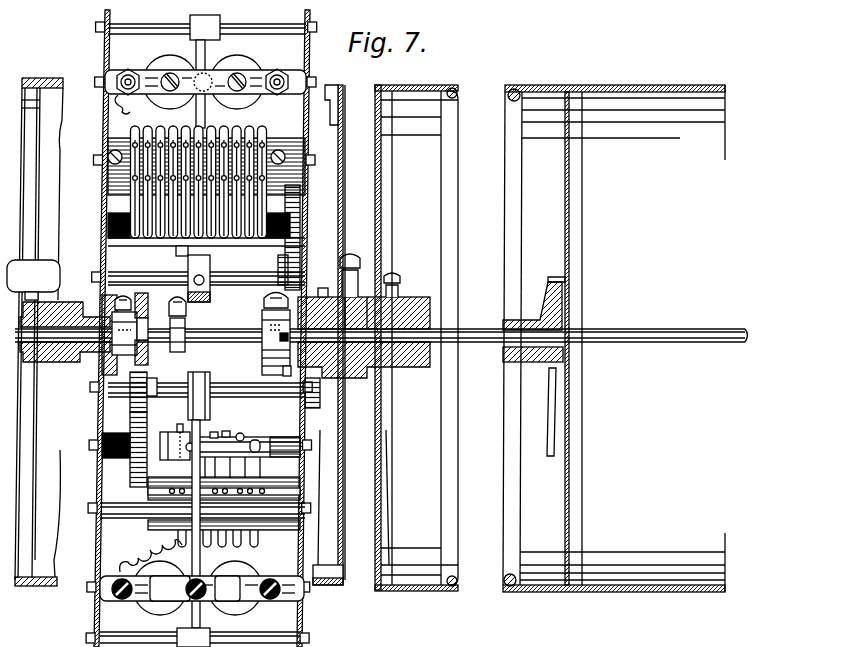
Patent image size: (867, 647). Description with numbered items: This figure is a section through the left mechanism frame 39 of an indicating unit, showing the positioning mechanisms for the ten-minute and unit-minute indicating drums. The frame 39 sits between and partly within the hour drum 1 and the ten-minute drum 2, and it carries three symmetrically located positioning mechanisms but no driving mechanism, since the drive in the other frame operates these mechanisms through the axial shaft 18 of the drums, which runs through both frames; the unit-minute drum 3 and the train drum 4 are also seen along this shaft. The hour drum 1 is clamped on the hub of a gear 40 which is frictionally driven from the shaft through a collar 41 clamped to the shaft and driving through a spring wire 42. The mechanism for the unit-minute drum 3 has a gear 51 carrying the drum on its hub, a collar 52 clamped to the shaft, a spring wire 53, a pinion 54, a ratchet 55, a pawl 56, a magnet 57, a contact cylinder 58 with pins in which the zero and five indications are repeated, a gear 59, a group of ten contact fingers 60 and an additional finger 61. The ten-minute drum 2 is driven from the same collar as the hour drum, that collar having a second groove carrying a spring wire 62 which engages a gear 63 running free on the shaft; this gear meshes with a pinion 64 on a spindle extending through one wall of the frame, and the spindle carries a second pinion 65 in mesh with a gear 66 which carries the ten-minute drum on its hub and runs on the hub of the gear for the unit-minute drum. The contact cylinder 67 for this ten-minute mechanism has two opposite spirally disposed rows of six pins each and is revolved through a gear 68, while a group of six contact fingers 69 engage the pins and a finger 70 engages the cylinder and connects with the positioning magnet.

The hour drum 1 is at (19, 584).
The ten-minute drum 2 is at (325, 587).
The unit-minute drum 3 is at (396, 588).
The train drum 4 is at (606, 590).
The main shaft 18 is at (630, 333).
The frame 39 is at (92, 617).
The gear 40 is at (100, 375).
The collar 41 is at (124, 339).
The spring wire 42 is at (101, 306).
The gear 51 is at (283, 372).
The collar 52 is at (266, 355).
The spring wire 53 is at (280, 334).
The pinion 54 is at (283, 270).
The ratchet 55 is at (206, 282).
The pawl 56 is at (197, 246).
The magnet 57 is at (256, 97).
The contact cylinder 58 is at (173, 246).
The gear 59 is at (304, 214).
The contact fingers 60 is at (153, 237).
The additional finger 61 is at (133, 238).
The spring wire 62 is at (157, 346).
The gear 63 is at (167, 322).
The pinion 64 is at (148, 397).
The second pinion 65 is at (316, 403).
The gear 66 is at (313, 300).
The contact cylinder 67 is at (245, 437).
The gear 68 is at (133, 462).
The contact fingers 69 is at (188, 537).
The finger 70 is at (184, 432).